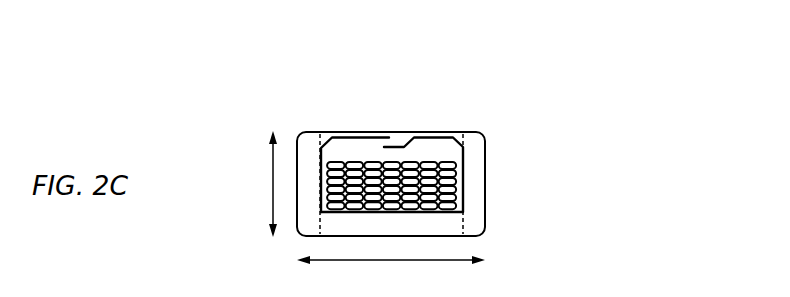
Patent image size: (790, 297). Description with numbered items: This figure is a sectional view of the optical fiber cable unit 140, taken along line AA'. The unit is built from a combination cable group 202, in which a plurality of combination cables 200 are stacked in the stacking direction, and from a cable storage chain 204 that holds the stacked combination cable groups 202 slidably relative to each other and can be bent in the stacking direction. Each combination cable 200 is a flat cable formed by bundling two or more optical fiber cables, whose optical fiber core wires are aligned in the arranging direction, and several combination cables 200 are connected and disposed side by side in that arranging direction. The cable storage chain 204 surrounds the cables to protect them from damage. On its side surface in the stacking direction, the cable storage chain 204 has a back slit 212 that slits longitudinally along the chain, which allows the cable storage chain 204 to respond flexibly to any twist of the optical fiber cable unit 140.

The optical fiber cable unit 140 is at (592, 50).
The cable storage chain 204 is at (461, 120).
The back slit 212 is at (403, 122).
The combination cable 200 is at (458, 165).
The combination cable group 202 is at (472, 168).